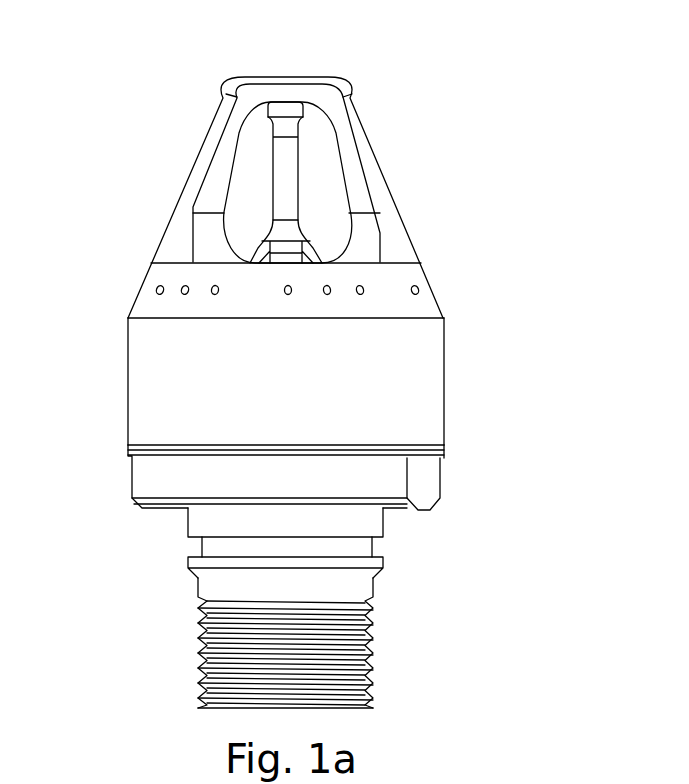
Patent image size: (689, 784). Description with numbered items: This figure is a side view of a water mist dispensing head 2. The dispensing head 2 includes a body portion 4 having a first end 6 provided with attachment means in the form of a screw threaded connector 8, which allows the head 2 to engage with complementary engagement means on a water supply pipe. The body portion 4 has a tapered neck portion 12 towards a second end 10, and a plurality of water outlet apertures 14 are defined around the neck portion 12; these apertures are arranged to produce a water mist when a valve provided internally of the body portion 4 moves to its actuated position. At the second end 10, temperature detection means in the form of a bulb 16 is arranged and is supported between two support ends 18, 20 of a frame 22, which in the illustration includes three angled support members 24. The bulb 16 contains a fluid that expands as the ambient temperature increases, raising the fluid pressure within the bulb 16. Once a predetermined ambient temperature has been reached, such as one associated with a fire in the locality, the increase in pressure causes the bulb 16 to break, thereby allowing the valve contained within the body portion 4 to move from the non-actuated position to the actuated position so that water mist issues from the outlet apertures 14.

The dispensing head 2 is at (301, 360).
The body portion 4 is at (155, 400).
The first end 6 is at (329, 608).
The screw threaded connector 8 is at (370, 660).
The second end 10 is at (300, 165).
The tapered neck portion 12 is at (252, 283).
The water outlet apertures 14 is at (188, 284).
The bulb 16 is at (286, 172).
The support end 18 is at (286, 112).
The support end 20 is at (290, 236).
The frame 22 is at (205, 108).
The angled support members 24 is at (340, 128).